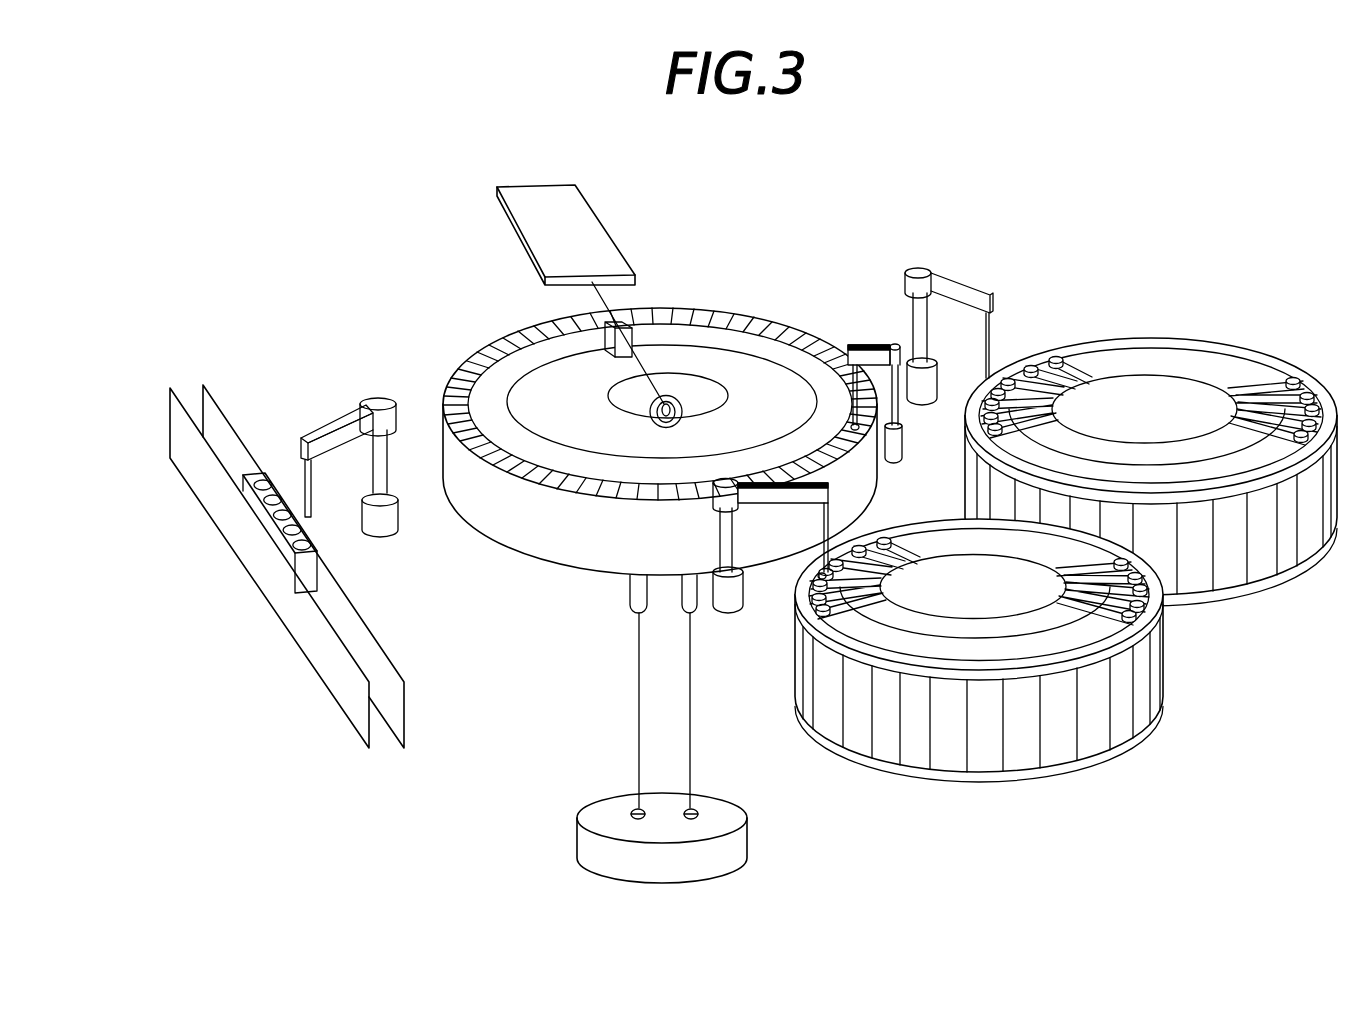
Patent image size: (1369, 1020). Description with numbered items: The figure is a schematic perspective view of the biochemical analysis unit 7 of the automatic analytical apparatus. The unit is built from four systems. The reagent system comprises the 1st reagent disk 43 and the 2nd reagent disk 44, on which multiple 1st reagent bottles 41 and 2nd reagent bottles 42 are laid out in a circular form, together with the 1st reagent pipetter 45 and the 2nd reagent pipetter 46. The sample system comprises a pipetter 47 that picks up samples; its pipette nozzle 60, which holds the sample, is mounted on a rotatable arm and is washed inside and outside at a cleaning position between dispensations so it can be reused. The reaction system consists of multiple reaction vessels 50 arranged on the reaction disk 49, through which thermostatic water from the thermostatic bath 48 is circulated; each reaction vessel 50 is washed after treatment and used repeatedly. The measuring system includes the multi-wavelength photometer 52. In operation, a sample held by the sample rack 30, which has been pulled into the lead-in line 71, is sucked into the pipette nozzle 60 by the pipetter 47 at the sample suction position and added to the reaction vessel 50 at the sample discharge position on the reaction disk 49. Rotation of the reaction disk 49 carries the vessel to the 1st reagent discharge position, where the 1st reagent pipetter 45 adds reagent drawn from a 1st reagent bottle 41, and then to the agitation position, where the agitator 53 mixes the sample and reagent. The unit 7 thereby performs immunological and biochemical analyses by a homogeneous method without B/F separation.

The biochemical analysis unit 7 is at (487, 775).
The sample rack 30 is at (258, 507).
The 1st reagent bottle 41 is at (1157, 613).
The 2nd reagent bottle 42 is at (1293, 388).
The 1st reagent disk 43 is at (1030, 758).
The 2nd reagent disk 44 is at (1208, 340).
The 1st reagent pipetter 45 is at (790, 500).
The 2nd reagent pipetter 46 is at (957, 280).
The pipetter 47 is at (340, 412).
The thermostatic bath 48 is at (725, 853).
The reaction disk 49 is at (507, 335).
The reaction vessel 50 is at (725, 317).
The multi-wavelength photometer 52 is at (575, 220).
The agitator 53 is at (870, 343).
The pipette nozzle 60 is at (312, 498).
The lead-in line 71 is at (223, 435).